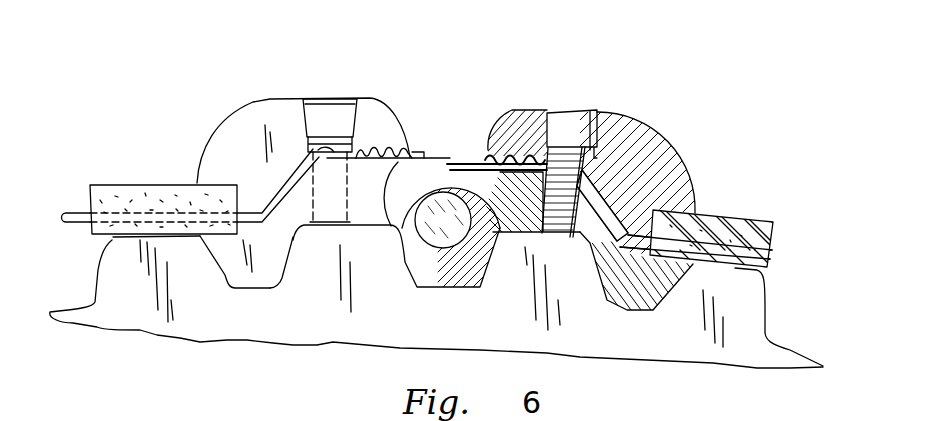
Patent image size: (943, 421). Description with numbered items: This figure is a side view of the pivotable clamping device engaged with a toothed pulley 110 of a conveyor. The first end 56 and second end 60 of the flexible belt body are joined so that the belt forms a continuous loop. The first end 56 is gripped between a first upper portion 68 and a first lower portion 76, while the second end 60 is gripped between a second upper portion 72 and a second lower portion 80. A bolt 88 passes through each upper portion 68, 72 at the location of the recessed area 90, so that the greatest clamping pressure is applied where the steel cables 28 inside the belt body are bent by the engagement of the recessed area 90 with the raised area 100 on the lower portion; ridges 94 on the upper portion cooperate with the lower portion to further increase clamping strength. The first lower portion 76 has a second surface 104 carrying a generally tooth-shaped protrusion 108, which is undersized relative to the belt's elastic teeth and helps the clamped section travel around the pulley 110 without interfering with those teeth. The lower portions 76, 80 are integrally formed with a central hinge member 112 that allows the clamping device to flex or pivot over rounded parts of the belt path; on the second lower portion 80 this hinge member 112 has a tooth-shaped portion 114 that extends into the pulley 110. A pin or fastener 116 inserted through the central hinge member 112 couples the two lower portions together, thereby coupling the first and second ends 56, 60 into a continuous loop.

The steel cables 28 is at (70, 211).
The first end 56 is at (125, 185).
The second end 60 is at (733, 217).
The first upper portion 68 is at (233, 110).
The second upper portion 72 is at (655, 125).
The first lower portion 76 is at (297, 237).
The second lower portion 80 is at (590, 243).
The bolt 88 is at (323, 97).
The recessed area 90 is at (313, 147).
The ridges 94 is at (387, 142).
The raised area 100 is at (327, 150).
The second surface 104 is at (400, 163).
The tooth-shaped protrusion 108 is at (225, 273).
The pulley 110 is at (667, 353).
The central hinge member 112 is at (480, 118).
The tooth-shaped portion 114 is at (413, 280).
The pin or fastener 116 is at (445, 197).